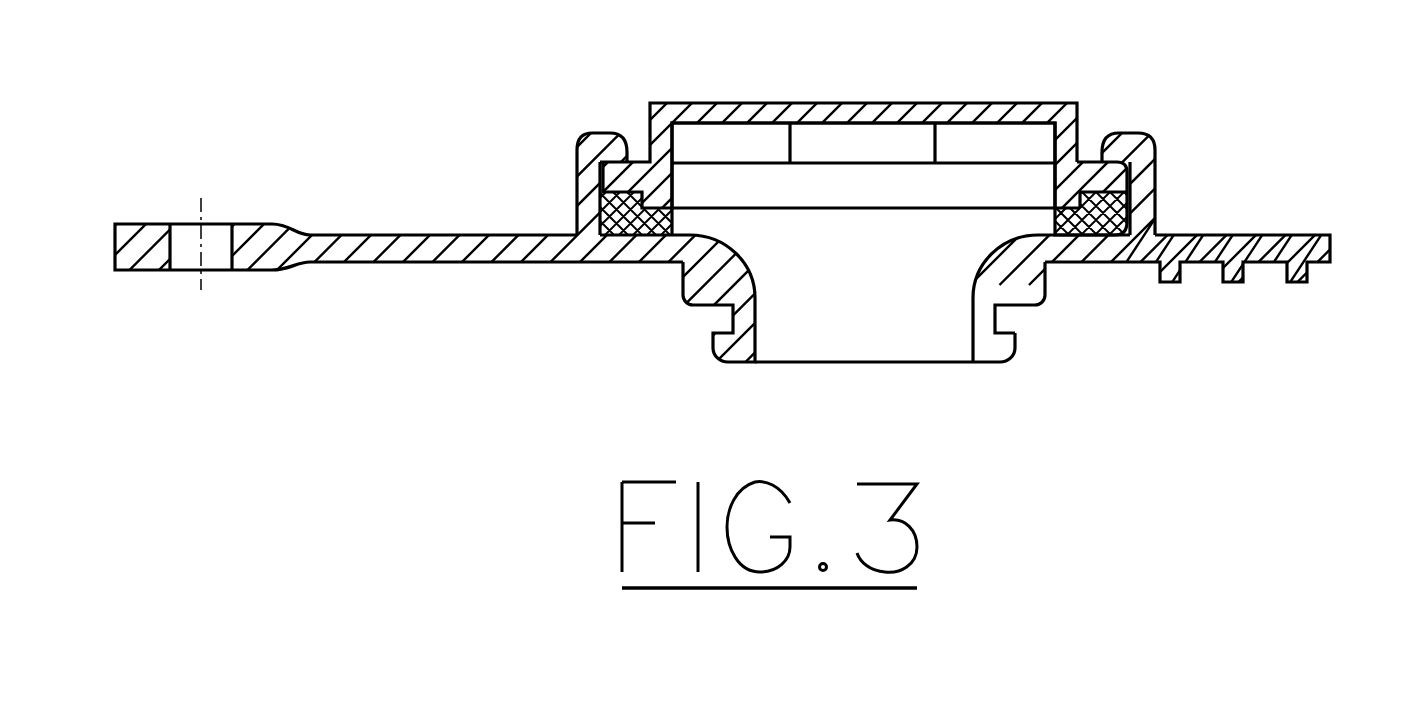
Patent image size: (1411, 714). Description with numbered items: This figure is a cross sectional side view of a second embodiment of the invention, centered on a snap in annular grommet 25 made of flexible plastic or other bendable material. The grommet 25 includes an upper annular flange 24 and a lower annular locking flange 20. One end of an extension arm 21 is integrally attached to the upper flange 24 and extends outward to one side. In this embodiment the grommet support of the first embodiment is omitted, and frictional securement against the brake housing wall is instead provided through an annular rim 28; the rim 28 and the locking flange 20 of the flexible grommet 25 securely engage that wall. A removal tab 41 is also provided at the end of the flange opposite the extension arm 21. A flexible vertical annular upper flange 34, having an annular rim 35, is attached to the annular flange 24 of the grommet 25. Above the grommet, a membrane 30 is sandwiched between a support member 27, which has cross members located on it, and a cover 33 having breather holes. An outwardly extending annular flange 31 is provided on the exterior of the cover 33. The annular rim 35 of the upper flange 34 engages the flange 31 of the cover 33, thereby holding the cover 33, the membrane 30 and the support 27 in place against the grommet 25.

The lower annular locking flange 20 is at (997, 349).
The extension arm 21 is at (383, 235).
The upper annular flange 24 is at (1130, 263).
The snap in annular grommet 25 is at (1018, 318).
The support member 27 is at (658, 220).
The annular rim 28 is at (688, 294).
The membrane 30 is at (892, 207).
The outwardly extending annular flange 31 is at (1103, 177).
The cover 33 is at (695, 105).
The flexible vertical annular upper flange 34 is at (587, 203).
The annular rim 35 is at (604, 133).
The removal tab 41 is at (1315, 237).